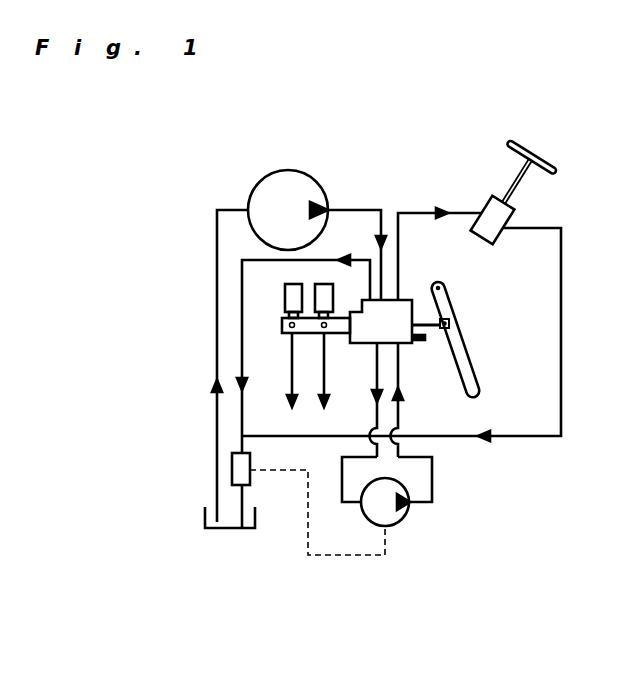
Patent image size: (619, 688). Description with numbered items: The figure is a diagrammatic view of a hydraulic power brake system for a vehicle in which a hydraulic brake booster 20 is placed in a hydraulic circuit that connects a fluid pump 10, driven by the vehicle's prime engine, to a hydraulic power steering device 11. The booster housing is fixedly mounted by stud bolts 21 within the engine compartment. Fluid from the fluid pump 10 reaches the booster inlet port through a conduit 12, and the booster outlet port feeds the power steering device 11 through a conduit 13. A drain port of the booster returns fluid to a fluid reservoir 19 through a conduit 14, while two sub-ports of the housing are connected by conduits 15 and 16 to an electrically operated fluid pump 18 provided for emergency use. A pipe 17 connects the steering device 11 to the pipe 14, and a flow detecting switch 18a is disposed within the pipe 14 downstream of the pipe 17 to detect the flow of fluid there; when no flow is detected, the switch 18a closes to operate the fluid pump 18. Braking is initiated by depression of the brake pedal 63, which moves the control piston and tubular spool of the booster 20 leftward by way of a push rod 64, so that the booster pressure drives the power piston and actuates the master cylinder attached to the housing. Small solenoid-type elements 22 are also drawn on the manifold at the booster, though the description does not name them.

The fluid pump 10 is at (288, 178).
The hydraulic power steering device 11 is at (506, 219).
The conduit 12 is at (346, 212).
The conduit 13 is at (400, 262).
The conduit 14 is at (243, 363).
The conduit 15 is at (376, 416).
The conduit 16 is at (400, 422).
The pipe 17 is at (563, 316).
The electrically operated fluid pump 18 is at (396, 520).
The flow detecting switch 18a is at (246, 466).
The fluid reservoir 19 is at (228, 532).
The hydraulic brake booster 20 is at (397, 335).
The stud bolts 21 is at (420, 343).
The solenoid valves 22 is at (278, 325).
The brake pedal 63 is at (474, 392).
The push rod 64 is at (431, 320).